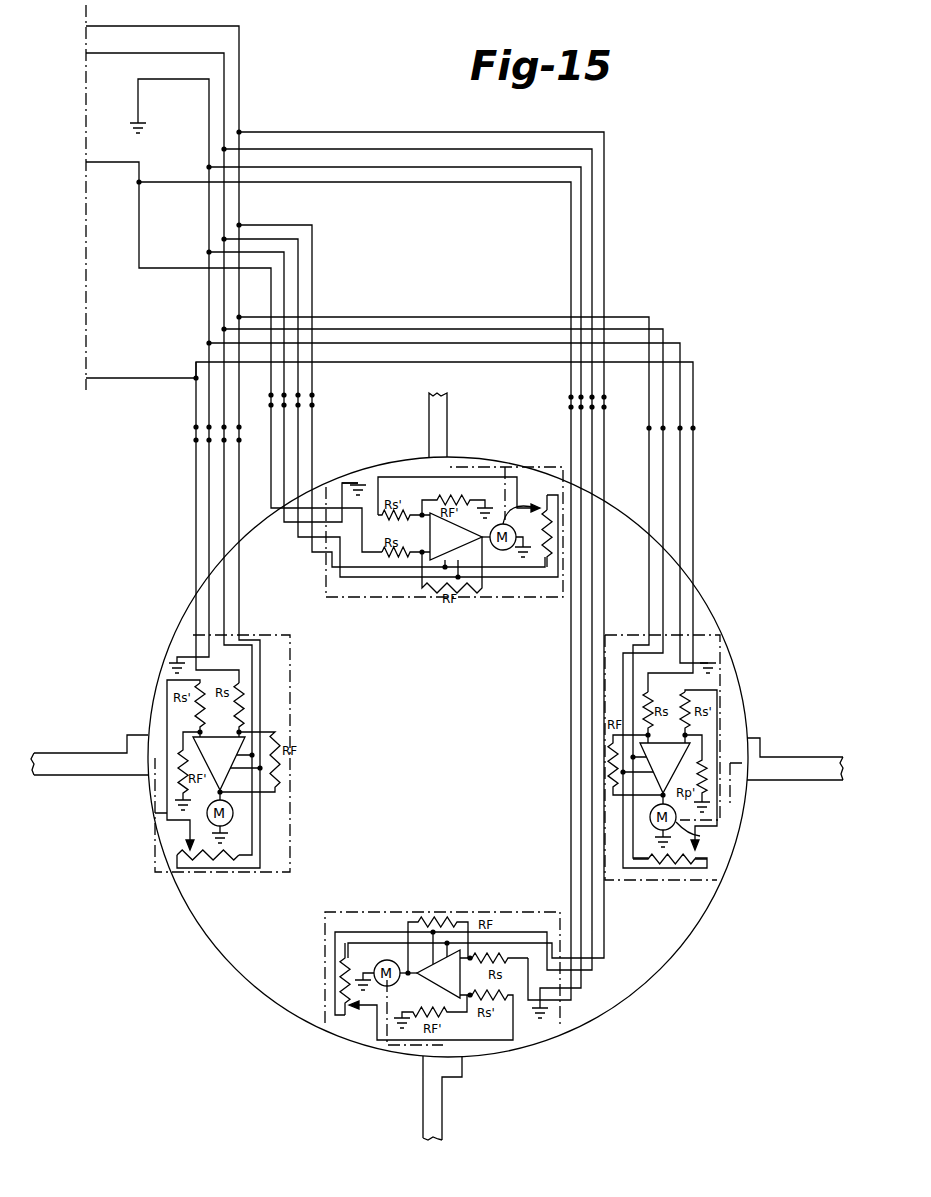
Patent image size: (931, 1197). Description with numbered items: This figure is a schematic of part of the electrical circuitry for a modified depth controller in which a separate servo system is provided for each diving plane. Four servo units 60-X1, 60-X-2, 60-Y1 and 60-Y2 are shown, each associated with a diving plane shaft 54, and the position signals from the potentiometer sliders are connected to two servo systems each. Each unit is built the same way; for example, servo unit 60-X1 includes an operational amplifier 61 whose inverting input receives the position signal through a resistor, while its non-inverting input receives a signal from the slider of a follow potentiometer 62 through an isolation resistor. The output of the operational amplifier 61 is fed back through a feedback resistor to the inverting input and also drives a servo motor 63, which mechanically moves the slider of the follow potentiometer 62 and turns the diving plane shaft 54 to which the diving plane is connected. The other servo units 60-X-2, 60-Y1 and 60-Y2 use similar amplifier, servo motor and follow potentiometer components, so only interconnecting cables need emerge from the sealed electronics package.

The diving plane shaft 54 is at (429, 428).
The servo unit 60-X-2 is at (290, 786).
The servo unit 60-X1 is at (627, 884).
The servo unit 60-Y1 is at (402, 898).
The servo unit 60-Y2 is at (390, 599).
The operational amplifier 61 is at (450, 981).
The follow potentiometer 62 is at (212, 868).
The servo motor 63 is at (387, 960).